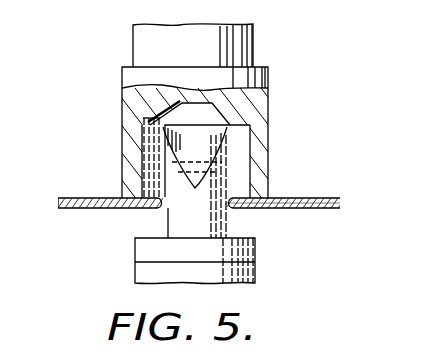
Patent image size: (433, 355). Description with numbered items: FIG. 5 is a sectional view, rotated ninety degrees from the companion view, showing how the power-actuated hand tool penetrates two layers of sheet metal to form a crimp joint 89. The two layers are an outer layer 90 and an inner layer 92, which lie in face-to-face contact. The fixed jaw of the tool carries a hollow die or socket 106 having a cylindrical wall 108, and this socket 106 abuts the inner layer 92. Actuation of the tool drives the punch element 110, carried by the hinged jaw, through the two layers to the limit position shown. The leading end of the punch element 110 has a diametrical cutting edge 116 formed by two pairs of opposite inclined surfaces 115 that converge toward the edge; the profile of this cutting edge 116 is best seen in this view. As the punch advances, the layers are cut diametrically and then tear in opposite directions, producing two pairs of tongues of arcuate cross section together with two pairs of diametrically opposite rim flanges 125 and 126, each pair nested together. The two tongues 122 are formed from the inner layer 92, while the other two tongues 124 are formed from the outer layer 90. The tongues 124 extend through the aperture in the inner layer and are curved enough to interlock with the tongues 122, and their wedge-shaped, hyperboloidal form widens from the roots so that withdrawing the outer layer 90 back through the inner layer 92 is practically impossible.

The crimp joint 89 is at (242, 162).
The outer layer 90 is at (310, 210).
The inner layer 92 is at (310, 197).
The hollow die 106 is at (267, 78).
The cylindrical wall 108 is at (132, 165).
The punch element 110 is at (172, 215).
The inclined surfaces 115 is at (150, 114).
The cutting edge 116 is at (189, 114).
The tongues 122 is at (252, 127).
The tongues 124 is at (168, 170).
The rim flanges 125 is at (228, 209).
The rim flanges 126 is at (234, 187).